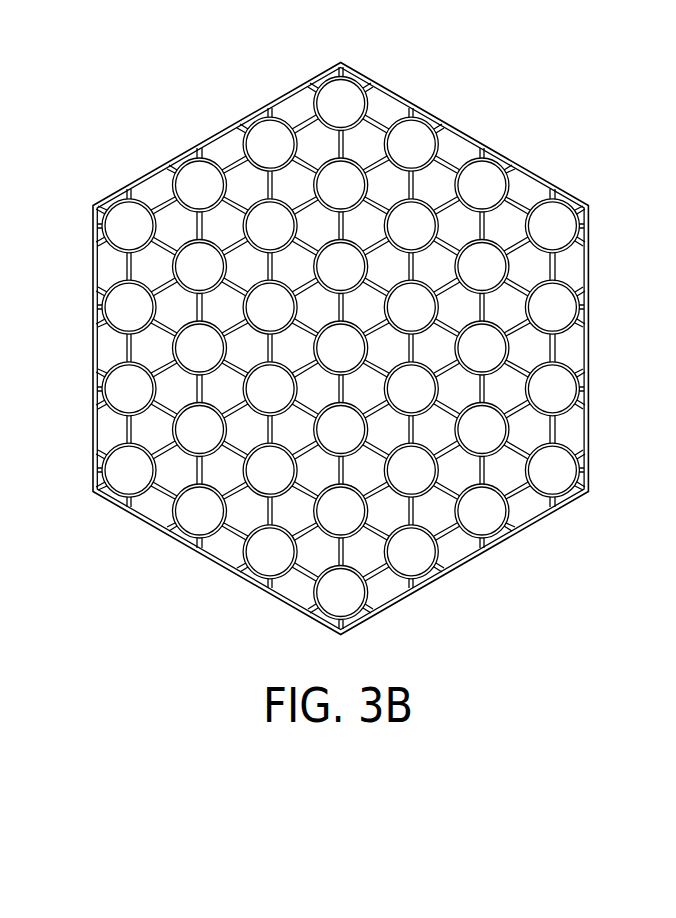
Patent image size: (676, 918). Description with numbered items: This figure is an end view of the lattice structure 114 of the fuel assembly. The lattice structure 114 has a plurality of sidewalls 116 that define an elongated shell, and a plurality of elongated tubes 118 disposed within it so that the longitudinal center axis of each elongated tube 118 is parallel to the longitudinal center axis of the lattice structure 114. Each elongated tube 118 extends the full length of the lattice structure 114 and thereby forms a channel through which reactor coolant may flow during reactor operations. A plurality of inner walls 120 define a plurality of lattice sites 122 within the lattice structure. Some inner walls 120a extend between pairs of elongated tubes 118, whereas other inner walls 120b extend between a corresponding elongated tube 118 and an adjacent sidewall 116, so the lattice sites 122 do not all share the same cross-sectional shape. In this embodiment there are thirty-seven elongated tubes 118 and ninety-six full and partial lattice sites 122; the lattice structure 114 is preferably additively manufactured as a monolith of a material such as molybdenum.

The lattice structure 114 is at (517, 116).
The sidewalls 116 is at (221, 133).
The elongated tubes 118 is at (578, 333).
The inner walls 120 is at (171, 205).
The inner walls 120a is at (309, 579).
The inner walls 120b is at (510, 176).
The lattice sites 122 is at (148, 266).